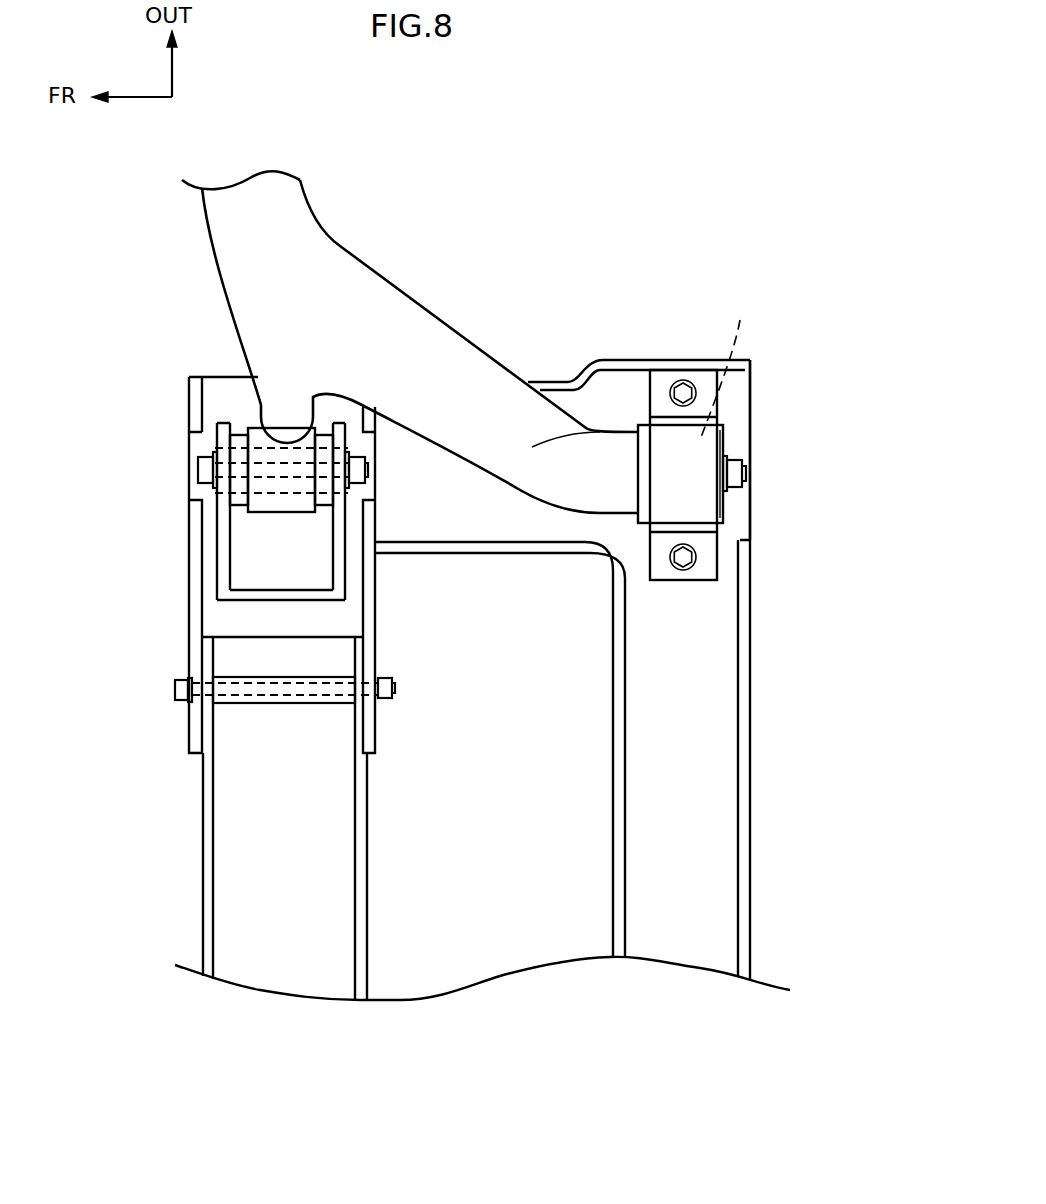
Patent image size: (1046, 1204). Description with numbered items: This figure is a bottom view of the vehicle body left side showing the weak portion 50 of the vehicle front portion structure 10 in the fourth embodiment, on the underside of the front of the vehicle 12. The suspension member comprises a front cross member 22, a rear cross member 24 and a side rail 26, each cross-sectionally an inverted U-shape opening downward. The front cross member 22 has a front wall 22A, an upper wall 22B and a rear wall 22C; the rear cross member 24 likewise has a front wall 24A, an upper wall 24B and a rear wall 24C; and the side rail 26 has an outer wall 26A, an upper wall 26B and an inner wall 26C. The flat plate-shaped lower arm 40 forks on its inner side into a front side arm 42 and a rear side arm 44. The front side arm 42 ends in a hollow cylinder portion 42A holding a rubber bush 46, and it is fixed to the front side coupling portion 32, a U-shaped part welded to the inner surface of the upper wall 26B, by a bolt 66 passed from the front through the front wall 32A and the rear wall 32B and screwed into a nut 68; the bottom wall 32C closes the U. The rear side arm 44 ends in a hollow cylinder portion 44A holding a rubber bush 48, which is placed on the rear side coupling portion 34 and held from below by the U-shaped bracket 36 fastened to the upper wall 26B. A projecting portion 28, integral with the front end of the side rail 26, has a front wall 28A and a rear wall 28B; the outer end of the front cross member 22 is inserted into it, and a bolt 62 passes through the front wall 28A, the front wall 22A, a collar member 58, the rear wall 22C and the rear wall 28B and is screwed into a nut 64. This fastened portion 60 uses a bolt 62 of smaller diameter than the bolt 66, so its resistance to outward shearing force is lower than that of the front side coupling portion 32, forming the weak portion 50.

The vehicle front portion structure 10 is at (438, 584).
The vehicle 12 is at (448, 584).
The front cross member 22 is at (281, 847).
The front wall 22A is at (203, 898).
The upper wall 22B is at (280, 980).
The rear wall 22C is at (367, 920).
The rear cross member 24 is at (679, 705).
The front wall 24A is at (613, 843).
The upper wall 24B is at (668, 953).
The rear wall 24C is at (750, 895).
The side rail 26 is at (610, 445).
The outer wall 26A is at (678, 360).
The upper wall 26B is at (736, 387).
The inner wall 26C is at (478, 555).
The projecting portion 28 is at (272, 565).
The front wall 28A is at (188, 517).
The rear wall 28B is at (377, 638).
The front side coupling portion 32 is at (242, 548).
The front wall 32A is at (190, 494).
The rear wall 32B is at (345, 495).
The bottom wall of inner bracket 32C is at (272, 600).
The rear side coupling portion 34 is at (772, 504).
The bracket 36 is at (698, 523).
The lower arm 40 is at (387, 327).
The front side arm 42 is at (273, 400).
The hollow cylinder portion 42A is at (278, 498).
The rear side arm 44 is at (690, 436).
The hollow cylinder portion 44A is at (735, 366).
The rubber bush 46 is at (327, 503).
The rubber bush 48 is at (723, 432).
The weak portion 50 is at (255, 742).
The collar member 58 is at (273, 707).
The fastened portion 60 is at (160, 712).
The bolt 62 is at (163, 698).
The nut 64 is at (392, 700).
The bolt 66 is at (200, 470).
The nut 68 is at (358, 453).